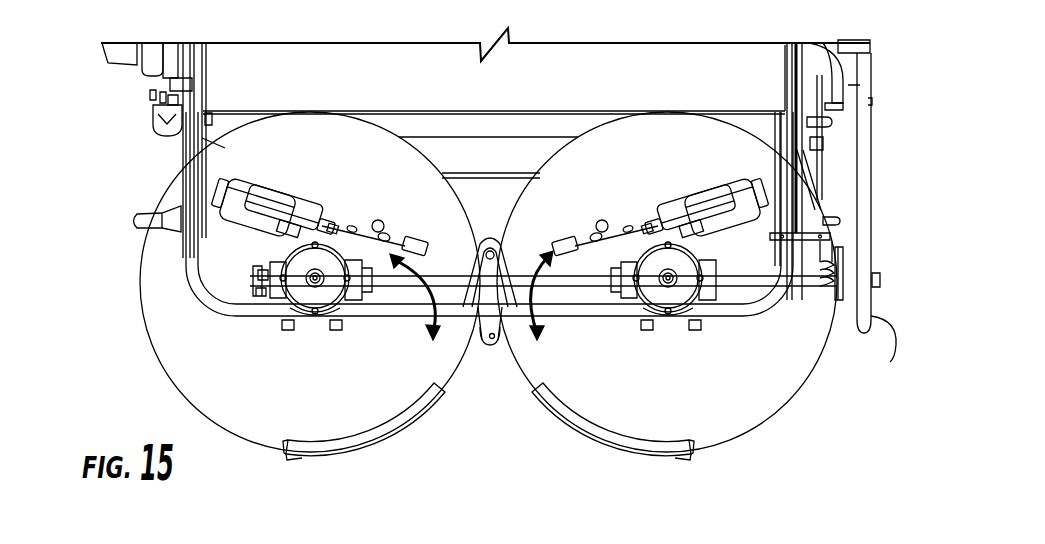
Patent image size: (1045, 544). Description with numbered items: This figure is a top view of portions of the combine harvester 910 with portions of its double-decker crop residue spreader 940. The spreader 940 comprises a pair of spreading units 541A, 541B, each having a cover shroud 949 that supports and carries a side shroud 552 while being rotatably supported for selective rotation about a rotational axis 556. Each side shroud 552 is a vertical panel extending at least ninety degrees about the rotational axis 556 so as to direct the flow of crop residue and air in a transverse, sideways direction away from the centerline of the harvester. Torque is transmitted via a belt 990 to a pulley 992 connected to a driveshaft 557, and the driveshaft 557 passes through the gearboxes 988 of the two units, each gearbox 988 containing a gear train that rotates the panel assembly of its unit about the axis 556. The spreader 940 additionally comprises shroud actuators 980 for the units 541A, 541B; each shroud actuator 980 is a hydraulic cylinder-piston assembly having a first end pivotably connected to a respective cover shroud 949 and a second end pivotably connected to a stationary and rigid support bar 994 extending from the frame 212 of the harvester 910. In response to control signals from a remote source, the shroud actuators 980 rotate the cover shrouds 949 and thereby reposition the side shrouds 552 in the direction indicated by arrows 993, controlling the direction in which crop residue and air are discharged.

The frame 212 is at (735, 53).
The combine harvester 910 is at (98, 127).
The double-decker crop residue spreader 940 is at (894, 115).
The belt 990 is at (863, 197).
The spreading unit 541A is at (131, 291).
The spreading unit 541B is at (884, 294).
The support bar 994 is at (192, 275).
The rotational axis 556 is at (313, 282).
The gearbox 988 is at (308, 300).
The shroud actuator 980 is at (265, 200).
The arrows 993 is at (397, 312).
The driveshaft 557 is at (490, 346).
The side shroud 552 is at (400, 422).
The cover shroud 949 is at (783, 387).
The pulley 992 is at (876, 332).